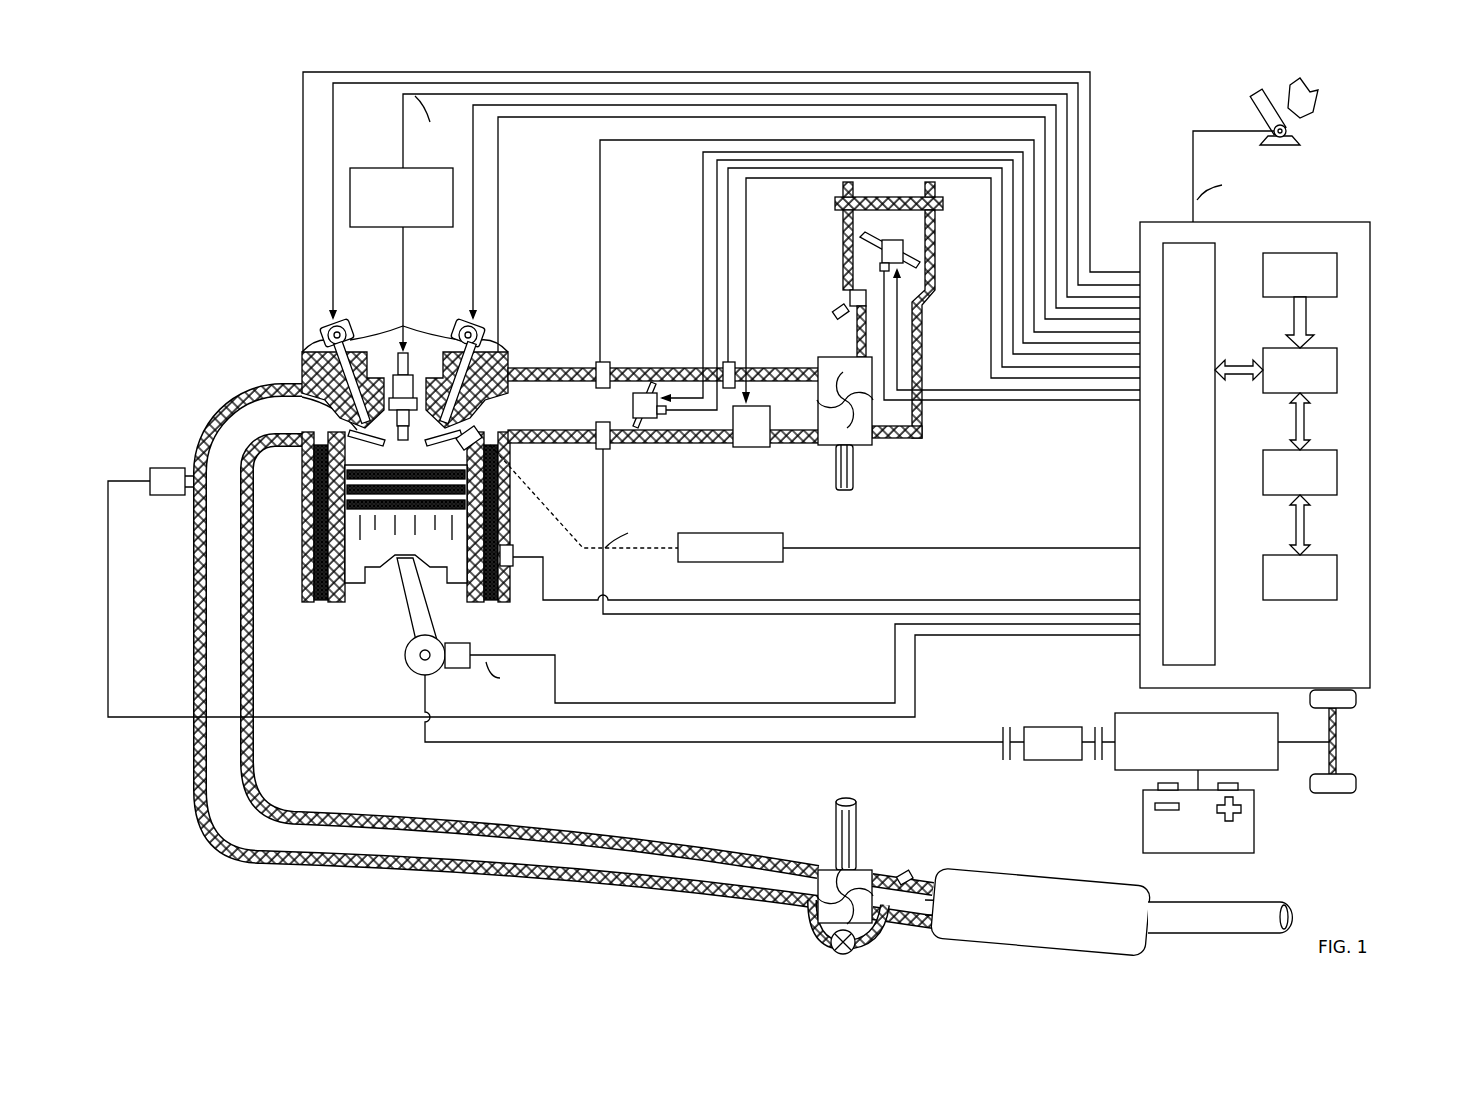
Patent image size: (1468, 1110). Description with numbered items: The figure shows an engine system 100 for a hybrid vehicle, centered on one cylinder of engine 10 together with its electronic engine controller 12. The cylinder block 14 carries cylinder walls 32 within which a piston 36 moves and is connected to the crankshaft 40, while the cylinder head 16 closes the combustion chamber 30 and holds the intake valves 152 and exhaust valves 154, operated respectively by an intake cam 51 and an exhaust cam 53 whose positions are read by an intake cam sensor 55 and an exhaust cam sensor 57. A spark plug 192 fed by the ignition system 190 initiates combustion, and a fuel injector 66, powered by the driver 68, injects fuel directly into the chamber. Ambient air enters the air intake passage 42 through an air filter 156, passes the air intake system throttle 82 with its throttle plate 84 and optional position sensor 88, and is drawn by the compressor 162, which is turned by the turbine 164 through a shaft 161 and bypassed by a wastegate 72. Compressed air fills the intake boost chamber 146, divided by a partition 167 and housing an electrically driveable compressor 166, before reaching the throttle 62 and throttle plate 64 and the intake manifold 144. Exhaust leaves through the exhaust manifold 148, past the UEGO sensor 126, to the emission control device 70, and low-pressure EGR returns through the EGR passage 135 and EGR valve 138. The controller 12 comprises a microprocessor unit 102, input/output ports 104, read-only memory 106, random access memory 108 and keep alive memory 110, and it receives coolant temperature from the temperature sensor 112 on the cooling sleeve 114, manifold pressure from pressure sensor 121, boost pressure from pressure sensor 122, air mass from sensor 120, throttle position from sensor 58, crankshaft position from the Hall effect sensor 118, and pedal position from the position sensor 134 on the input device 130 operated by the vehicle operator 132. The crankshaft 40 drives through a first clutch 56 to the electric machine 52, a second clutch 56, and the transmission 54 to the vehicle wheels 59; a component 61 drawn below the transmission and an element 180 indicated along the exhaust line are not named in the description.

The engine system 100 is at (150, 128).
The engine 10 is at (233, 280).
The electronic engine controller 12 is at (1296, 440).
The cylinder block 14 is at (305, 500).
The cylinder head 16 is at (522, 355).
The combustion chamber 30 is at (305, 560).
The cylinder walls 32 is at (338, 600).
The piston 36 is at (388, 540).
The crankshaft 40 is at (410, 677).
The air intake passage 42 is at (902, 236).
The intake cam 51 is at (462, 320).
The electric machine 52 is at (1048, 762).
The exhaust cam 53 is at (345, 320).
The transmission 54 is at (1255, 770).
The intake cam sensor 55 is at (480, 342).
The clutch 56 is at (1003, 732).
The exhaust cam sensor 57 is at (325, 345).
The throttle position sensor 58 is at (660, 425).
The vehicle wheels 59 is at (1335, 793).
The battery 61 is at (1195, 853).
The throttle 62 is at (645, 383).
The throttle plate 64 is at (664, 400).
The fuel injector 66 is at (488, 455).
The driver 68 is at (757, 533).
The emission control device 70 is at (930, 940).
The wastegate 72 is at (828, 945).
The air intake system throttle 82 is at (810, 231).
The throttle plate 84 is at (862, 238).
The position sensor 88 is at (878, 267).
The microprocessor unit 102 is at (1337, 370).
The input/output ports 104 is at (1216, 255).
The read-only memory 106 is at (1337, 272).
The random access memory 108 is at (1337, 473).
The keep alive memory 110 is at (1337, 573).
The temperature sensor 112 is at (513, 548).
The cooling sleeve 114 is at (498, 590).
The Hall effect sensor 118 is at (455, 675).
The air mass sensor 120 is at (605, 449).
The pressure sensor 121 is at (604, 362).
The pressure sensor 122 is at (738, 366).
The UEGO sensor 126 is at (150, 476).
The input device 130 is at (1262, 112).
The vehicle operator 132 is at (1318, 96).
The position sensor 134 is at (1298, 133).
The EGR passage 135 is at (840, 320).
The EGR valve 138 is at (850, 298).
The intake manifold 144 is at (835, 284).
The intake boost chamber 146 is at (835, 398).
The exhaust manifold 148 is at (288, 427).
The intake valves 152 is at (455, 425).
The exhaust valves 154 is at (320, 405).
The air filter 156 is at (943, 203).
The shaft 161 is at (855, 482).
The compressor 162 is at (872, 442).
The turbine 164 is at (818, 868).
The electrically driveable compressor 166 is at (548, 368).
The partition 167 is at (808, 395).
The exhaust system 180 is at (460, 895).
The ignition system 190 is at (392, 168).
The spark plug 192 is at (410, 338).